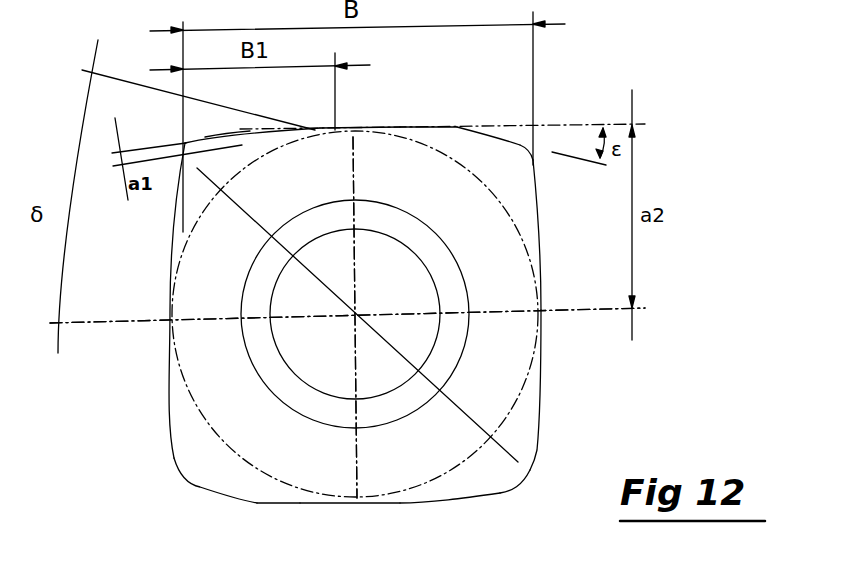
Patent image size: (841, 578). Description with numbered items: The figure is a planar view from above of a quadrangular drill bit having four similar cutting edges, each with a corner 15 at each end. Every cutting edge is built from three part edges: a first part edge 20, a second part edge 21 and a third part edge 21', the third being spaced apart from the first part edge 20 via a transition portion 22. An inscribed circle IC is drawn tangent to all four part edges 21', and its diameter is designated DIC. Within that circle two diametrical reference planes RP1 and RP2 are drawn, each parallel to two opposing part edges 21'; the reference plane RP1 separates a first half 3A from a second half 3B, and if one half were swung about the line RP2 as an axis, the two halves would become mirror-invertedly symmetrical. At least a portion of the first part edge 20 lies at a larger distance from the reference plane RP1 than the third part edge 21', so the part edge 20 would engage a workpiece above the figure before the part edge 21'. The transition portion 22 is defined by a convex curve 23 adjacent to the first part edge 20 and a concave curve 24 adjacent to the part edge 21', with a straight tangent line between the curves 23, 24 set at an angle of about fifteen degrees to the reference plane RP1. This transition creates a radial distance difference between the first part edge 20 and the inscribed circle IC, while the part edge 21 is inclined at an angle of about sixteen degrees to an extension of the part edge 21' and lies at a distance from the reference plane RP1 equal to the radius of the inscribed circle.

The corner 15 is at (185, 143).
The first part edge 20 is at (223, 133).
The second part edge 21 is at (315, 266).
The third part edge 21' is at (359, 323).
The transition portion 22 is at (318, 130).
The convex curve 23 is at (428, 503).
The concave curve 24 is at (377, 503).
The first half 3A is at (557, 229).
The second half 3B is at (553, 433).
The inscribed circle IC is at (203, 428).
The diameter of the inscribed circle DIC is at (247, 216).
The first reference plane RP1 is at (500, 312).
The second reference plane RP2 is at (357, 470).